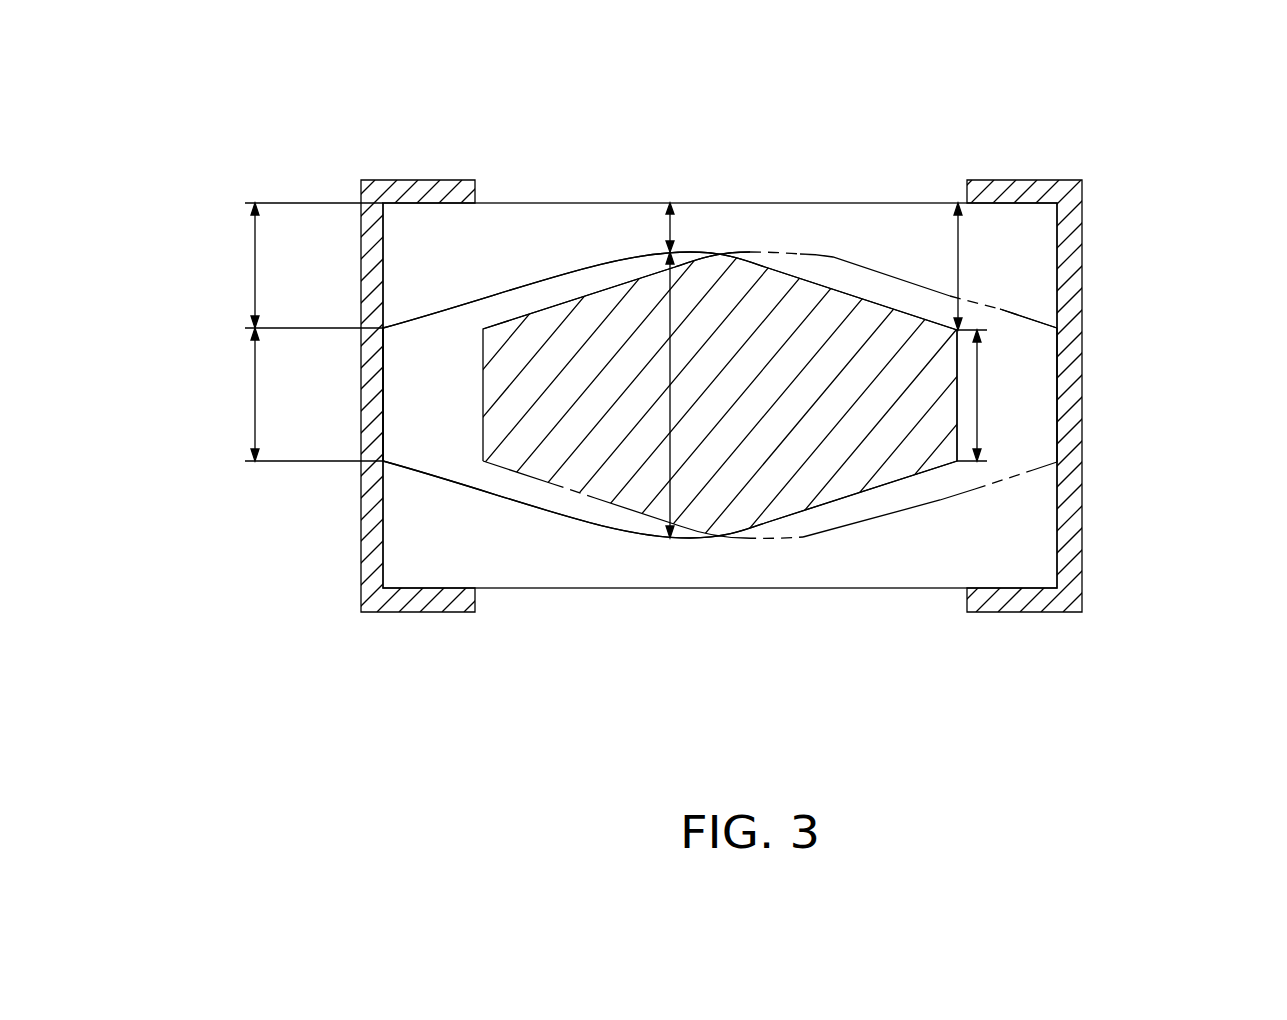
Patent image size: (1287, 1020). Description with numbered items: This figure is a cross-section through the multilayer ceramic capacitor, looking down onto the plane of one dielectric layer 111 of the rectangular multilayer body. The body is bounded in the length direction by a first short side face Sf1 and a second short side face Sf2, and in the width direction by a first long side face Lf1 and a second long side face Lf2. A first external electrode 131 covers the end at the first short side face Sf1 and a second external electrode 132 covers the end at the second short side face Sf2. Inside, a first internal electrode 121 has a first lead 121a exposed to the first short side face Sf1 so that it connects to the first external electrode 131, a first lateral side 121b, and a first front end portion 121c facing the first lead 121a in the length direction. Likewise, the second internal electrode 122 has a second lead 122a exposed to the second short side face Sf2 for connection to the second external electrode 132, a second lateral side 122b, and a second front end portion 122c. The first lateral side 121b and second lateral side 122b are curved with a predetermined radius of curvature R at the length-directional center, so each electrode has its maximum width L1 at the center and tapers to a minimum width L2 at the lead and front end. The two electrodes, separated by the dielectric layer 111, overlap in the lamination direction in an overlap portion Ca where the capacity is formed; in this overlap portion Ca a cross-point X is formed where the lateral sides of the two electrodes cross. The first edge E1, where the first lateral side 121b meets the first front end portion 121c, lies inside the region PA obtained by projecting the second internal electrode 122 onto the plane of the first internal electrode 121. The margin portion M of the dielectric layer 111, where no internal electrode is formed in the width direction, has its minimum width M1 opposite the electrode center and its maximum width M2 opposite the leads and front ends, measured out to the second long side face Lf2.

The dielectric layer 111 is at (533, 228).
The first external electrode 131 is at (413, 185).
The second external electrode 132 is at (1012, 188).
The first internal electrode 121 is at (212, 470).
The first lead 121a is at (383, 395).
The first lateral side 121b is at (540, 504).
The first front end portion 121c is at (955, 407).
The second internal electrode 122 is at (1180, 211).
The second lead 122a is at (485, 385).
The second lateral side 122b is at (1003, 307).
The second front end portion 122c is at (1058, 395).
The maximum width of margin portion M2 is at (606, 266).
The minimum width of internal electrode L2 is at (616, 394).
The minimum width of margin portion M1 is at (693, 227).
The maximum width of internal electrode L1 is at (686, 395).
The second long side face Lf2 is at (455, 205).
The first long side face Lf1 is at (453, 588).
The second short side face Sf2 is at (383, 584).
The first short side face Sf1 is at (1058, 572).
The radius of curvature R is at (625, 250).
The cross-point X is at (722, 254).
The margin portion M is at (826, 224).
The overlap portion Ca is at (763, 500).
The first edge E1 is at (955, 460).
The projected region PA is at (1013, 460).